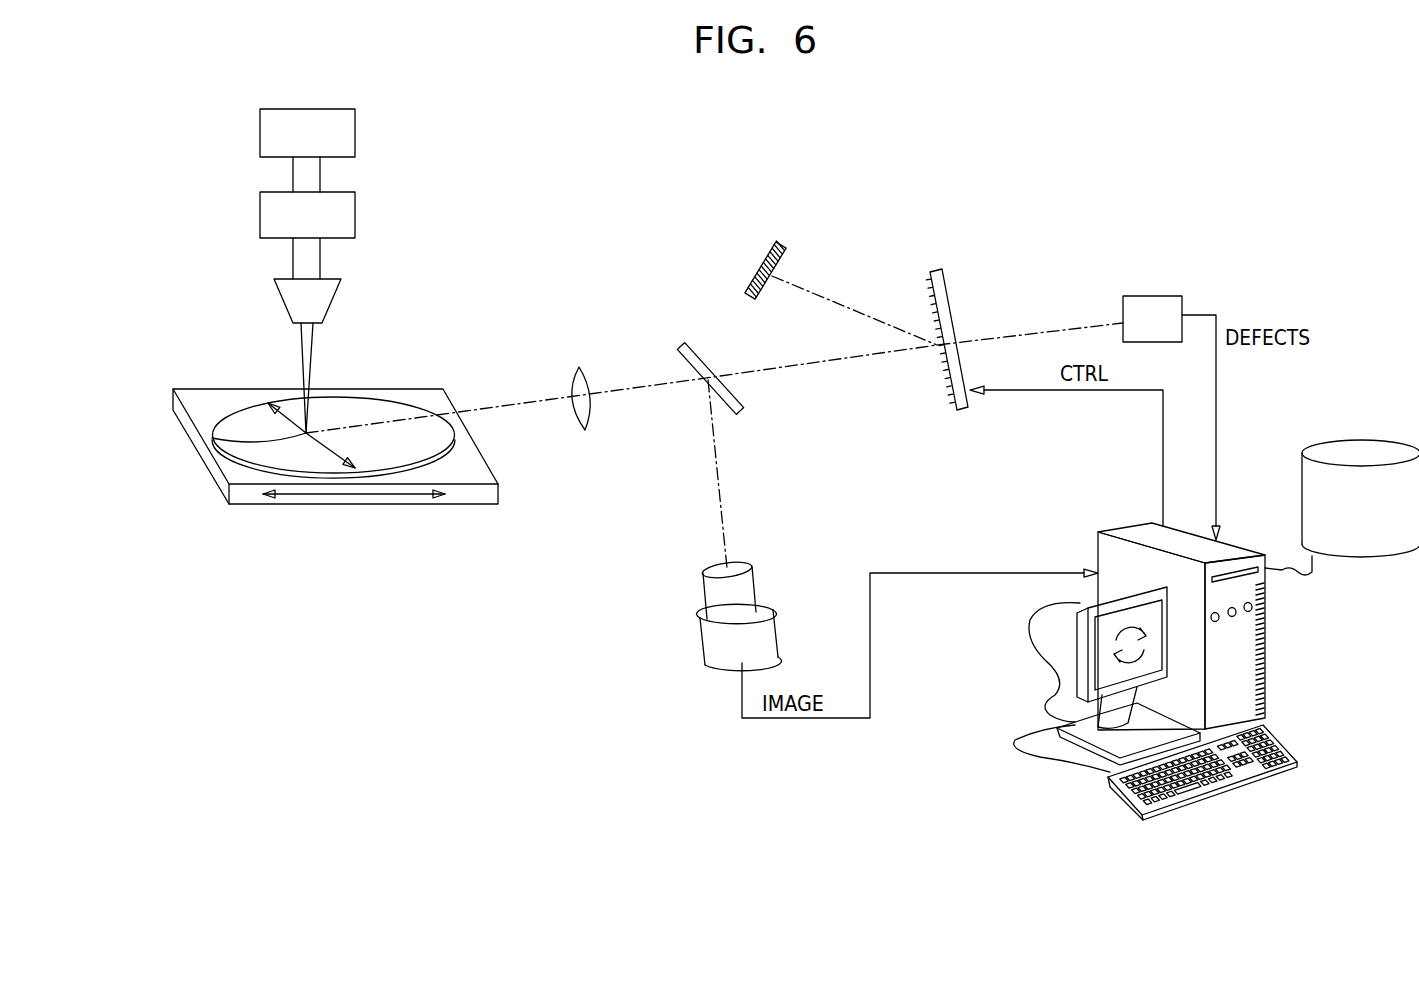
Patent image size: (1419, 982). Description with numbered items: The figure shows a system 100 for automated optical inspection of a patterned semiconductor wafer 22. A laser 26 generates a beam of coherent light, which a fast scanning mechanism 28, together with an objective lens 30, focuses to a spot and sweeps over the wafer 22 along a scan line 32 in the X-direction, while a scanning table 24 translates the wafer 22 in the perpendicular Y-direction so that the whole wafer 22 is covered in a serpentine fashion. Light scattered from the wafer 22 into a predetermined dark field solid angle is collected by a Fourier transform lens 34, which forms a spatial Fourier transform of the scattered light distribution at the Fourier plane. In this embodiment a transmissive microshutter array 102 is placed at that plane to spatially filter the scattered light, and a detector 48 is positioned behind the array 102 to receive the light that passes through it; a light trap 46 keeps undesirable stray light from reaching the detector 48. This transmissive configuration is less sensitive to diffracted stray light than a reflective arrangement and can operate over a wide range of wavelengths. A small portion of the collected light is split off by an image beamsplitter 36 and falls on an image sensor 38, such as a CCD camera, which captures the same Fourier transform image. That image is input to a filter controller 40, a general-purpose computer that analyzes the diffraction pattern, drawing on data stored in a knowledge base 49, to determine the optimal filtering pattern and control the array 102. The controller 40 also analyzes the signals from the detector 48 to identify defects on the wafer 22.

The patterned semiconductor wafer 22 is at (352, 408).
The scanning table 24 is at (357, 505).
The laser 26 is at (355, 132).
The fast scanning mechanism 28 is at (355, 215).
The objective lens 30 is at (328, 312).
The scan line 32 is at (213, 440).
The Fourier transform lens 34 is at (584, 428).
The image beamsplitter 36 is at (697, 353).
The image sensor 38 is at (708, 648).
The filter controller 40 is at (1265, 655).
The light trap 46 is at (770, 250).
The detector 48 is at (1147, 277).
The knowledge base 49 is at (1385, 438).
The system for automated inspection 100 is at (1122, 185).
The transmissive microshutter array 102 is at (945, 283).